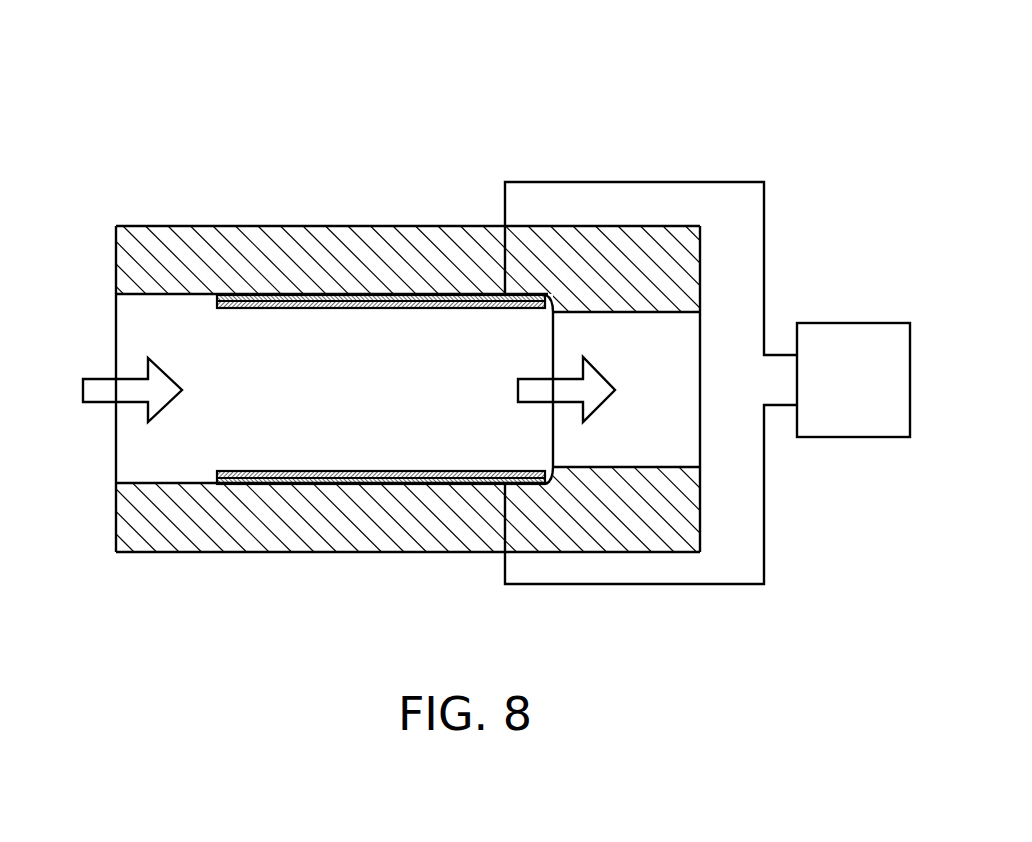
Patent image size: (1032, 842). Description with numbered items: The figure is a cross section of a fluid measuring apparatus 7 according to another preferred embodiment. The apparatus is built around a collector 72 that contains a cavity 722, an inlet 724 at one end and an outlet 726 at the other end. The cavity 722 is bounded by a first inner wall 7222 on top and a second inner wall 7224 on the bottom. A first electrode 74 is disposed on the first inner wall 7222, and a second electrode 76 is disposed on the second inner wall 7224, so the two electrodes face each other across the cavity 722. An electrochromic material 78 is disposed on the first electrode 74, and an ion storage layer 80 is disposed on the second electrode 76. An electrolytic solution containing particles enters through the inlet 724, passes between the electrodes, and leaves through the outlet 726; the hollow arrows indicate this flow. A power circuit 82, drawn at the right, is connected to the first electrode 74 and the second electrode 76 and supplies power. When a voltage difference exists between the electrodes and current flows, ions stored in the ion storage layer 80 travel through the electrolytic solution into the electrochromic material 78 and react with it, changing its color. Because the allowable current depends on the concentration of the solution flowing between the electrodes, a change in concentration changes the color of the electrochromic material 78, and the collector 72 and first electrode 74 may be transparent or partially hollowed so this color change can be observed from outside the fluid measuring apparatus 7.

The fluid measuring apparatus 7 is at (800, 128).
The collector 72 is at (297, 230).
The cavity 722 is at (288, 437).
The first inner wall 7222 is at (171, 294).
The second inner wall 7224 is at (165, 483).
The inlet 724 is at (142, 322).
The outlet 726 is at (563, 435).
The first electrode 74 is at (388, 296).
The second electrode 76 is at (385, 483).
The electrochromic material 78 is at (425, 308).
The ion storage layer 80 is at (320, 471).
The power circuit 82 is at (818, 322).